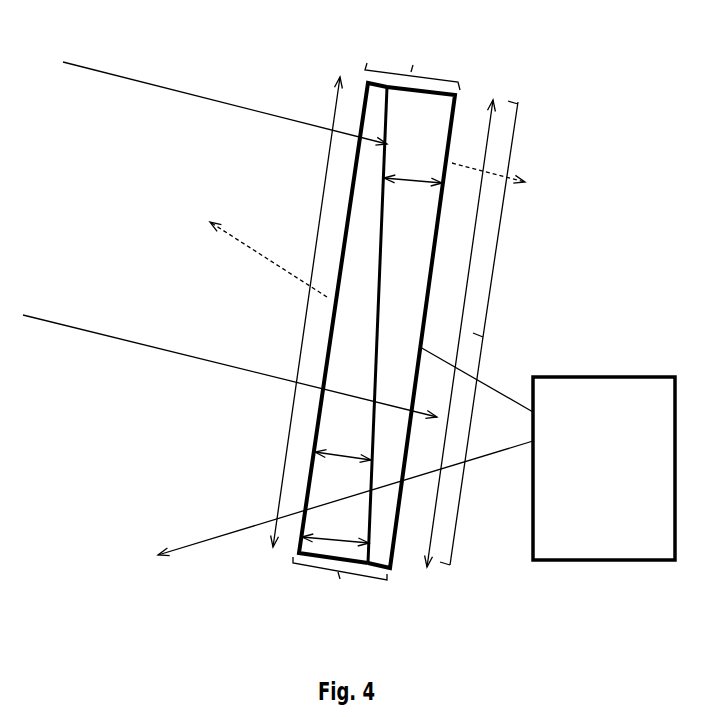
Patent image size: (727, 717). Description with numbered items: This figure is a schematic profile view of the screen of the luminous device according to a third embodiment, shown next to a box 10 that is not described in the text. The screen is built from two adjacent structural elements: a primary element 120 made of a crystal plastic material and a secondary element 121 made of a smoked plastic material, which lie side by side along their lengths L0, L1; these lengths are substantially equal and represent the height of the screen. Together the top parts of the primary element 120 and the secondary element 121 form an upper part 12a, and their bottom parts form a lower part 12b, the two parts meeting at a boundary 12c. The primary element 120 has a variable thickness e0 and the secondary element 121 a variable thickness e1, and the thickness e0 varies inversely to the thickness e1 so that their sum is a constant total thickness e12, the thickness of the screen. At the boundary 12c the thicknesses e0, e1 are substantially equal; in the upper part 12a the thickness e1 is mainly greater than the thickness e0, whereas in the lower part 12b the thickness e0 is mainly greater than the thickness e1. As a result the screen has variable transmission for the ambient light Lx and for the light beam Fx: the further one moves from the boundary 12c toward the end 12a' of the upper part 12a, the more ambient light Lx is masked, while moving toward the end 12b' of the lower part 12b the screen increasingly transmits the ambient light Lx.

The light source / imaging device 10 is at (604, 468).
The primary element 120 is at (380, 230).
The secondary element 121 is at (433, 120).
The upper part 12a is at (525, 219).
The lower part 12b is at (484, 451).
The end of the upper part 12a' is at (412, 55).
The end of the lower part 12b' is at (340, 588).
The boundary 12c is at (357, 317).
The ambient light Lx is at (274, 231).
The light beam Fx is at (345, 487).
The length of the primary element L0 is at (305, 312).
The length of the secondary element L1 is at (460, 333).
The thickness of the primary element e0 is at (343, 439).
The thickness of the secondary element e1 is at (413, 166).
The total thickness e12 is at (335, 528).